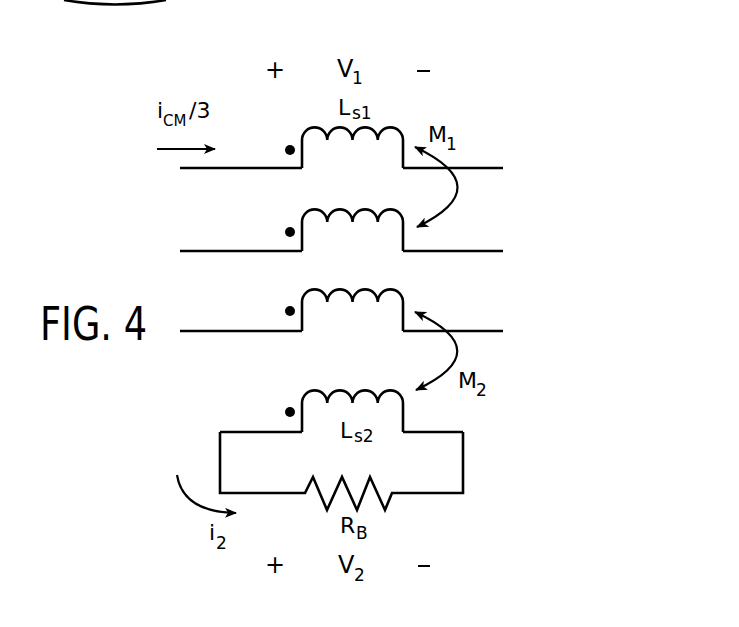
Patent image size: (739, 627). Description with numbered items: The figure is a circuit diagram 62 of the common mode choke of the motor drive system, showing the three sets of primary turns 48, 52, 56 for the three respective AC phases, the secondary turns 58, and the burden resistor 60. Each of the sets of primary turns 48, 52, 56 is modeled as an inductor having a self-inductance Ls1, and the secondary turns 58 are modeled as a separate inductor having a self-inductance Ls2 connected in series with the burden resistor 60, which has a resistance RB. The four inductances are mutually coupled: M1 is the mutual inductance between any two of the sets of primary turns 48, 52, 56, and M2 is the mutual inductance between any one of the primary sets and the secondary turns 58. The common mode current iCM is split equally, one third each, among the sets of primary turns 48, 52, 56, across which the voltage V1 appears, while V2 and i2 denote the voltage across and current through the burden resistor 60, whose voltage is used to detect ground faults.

The first set of primary turns 48 is at (402, 114).
The second set of primary turns 52 is at (305, 195).
The third set of primary turns 56 is at (305, 281).
The secondary turns 58 is at (305, 378).
The burden resistor 60 is at (398, 512).
The circuit diagram 62 is at (492, 77).